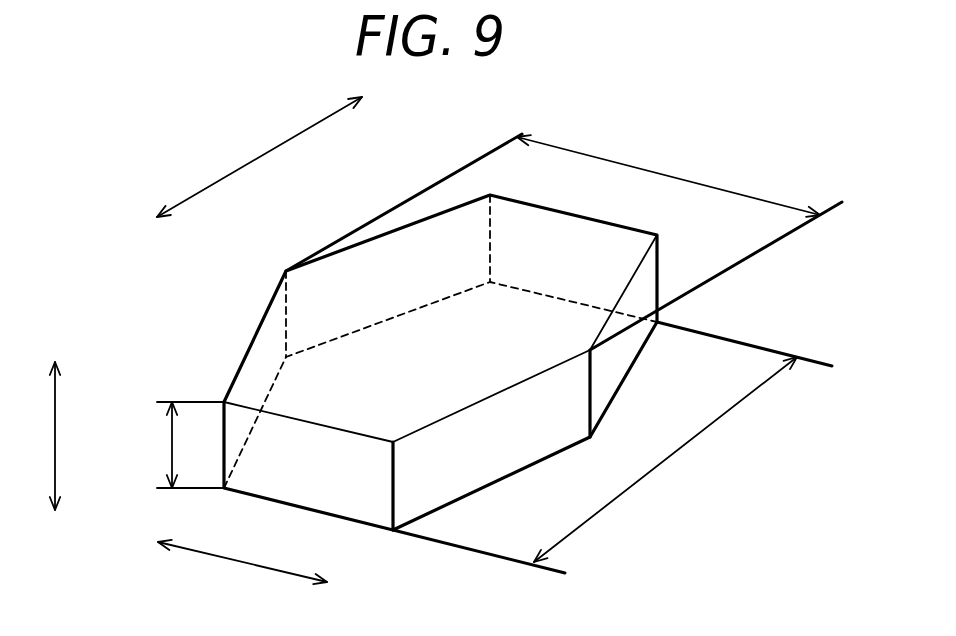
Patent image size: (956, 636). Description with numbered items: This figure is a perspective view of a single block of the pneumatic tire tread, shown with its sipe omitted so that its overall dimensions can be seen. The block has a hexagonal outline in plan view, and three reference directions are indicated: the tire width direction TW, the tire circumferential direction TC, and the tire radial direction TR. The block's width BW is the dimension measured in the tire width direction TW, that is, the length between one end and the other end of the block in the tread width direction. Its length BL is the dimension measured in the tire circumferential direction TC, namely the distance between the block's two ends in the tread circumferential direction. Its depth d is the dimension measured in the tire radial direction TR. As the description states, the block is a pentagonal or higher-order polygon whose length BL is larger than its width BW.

The tire circumferential direction TC is at (259, 157).
The width BW is at (564, 242).
The length BL is at (612, 447).
The tire radial direction TR is at (39, 436).
The depth d is at (188, 445).
The tire width direction TW is at (242, 564).